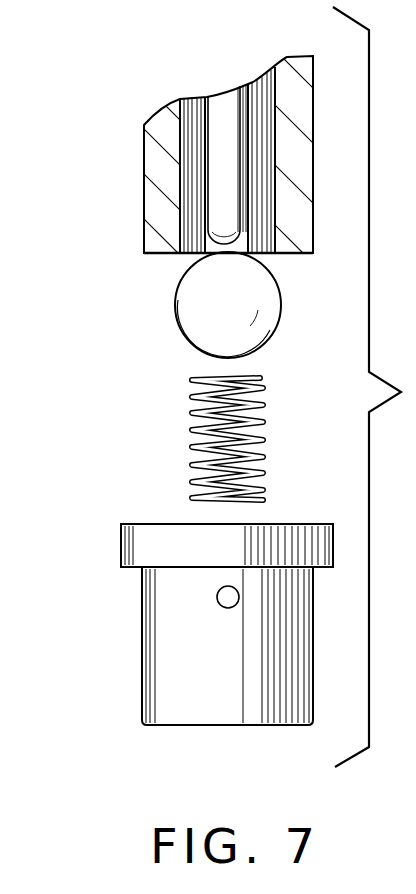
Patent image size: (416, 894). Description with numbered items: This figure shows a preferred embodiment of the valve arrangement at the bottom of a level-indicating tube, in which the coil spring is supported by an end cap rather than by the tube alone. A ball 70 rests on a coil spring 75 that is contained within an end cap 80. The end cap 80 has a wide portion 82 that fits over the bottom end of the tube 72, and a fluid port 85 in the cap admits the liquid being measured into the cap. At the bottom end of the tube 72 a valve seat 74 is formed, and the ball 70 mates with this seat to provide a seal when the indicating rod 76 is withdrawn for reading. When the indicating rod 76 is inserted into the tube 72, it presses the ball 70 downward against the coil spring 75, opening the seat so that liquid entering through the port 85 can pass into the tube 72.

The ball 70 is at (198, 325).
The tube 72 is at (152, 148).
The valve seat 74 is at (157, 256).
The coil spring 75 is at (195, 415).
The indicating rod 76 is at (217, 107).
The end cap 80 is at (167, 593).
The wide portion 82 is at (152, 523).
The fluid port 85 is at (217, 597).